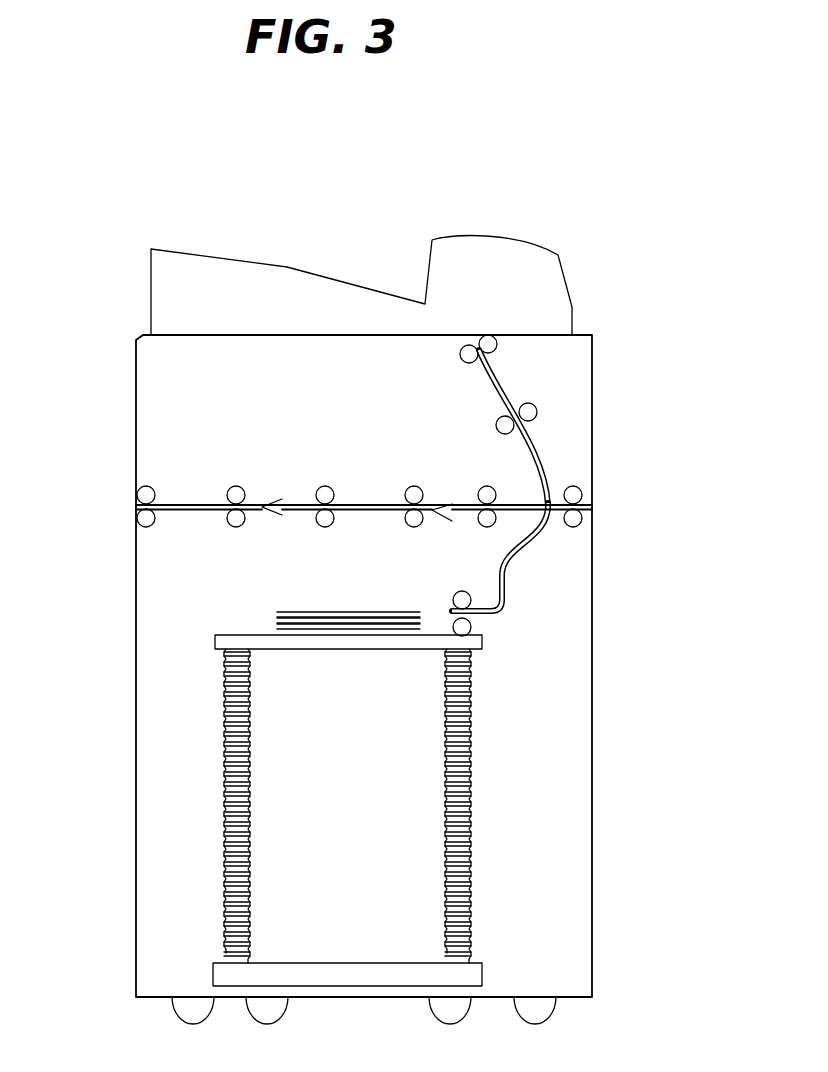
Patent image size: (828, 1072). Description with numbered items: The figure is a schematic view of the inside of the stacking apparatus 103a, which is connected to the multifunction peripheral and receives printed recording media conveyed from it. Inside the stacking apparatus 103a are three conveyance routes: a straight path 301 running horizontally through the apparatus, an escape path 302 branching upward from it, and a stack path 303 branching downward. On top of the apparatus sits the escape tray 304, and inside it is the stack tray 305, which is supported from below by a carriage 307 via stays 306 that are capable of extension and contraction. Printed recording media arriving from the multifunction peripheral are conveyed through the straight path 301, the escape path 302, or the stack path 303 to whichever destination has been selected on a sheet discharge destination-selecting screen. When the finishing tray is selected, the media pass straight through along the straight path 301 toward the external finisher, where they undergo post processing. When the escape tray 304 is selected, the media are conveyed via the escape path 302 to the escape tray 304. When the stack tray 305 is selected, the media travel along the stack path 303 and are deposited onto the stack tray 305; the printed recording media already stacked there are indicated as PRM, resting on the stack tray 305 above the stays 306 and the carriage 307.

The stacking apparatus 103a is at (631, 188).
The escape tray 304 is at (223, 268).
The escape path 302 is at (503, 378).
The stack path 303 is at (520, 550).
The straight path 301 is at (192, 503).
The printed recording media PRM is at (300, 610).
The stack tray 305 is at (227, 636).
The stays 306 is at (470, 782).
The carriage 307 is at (482, 972).